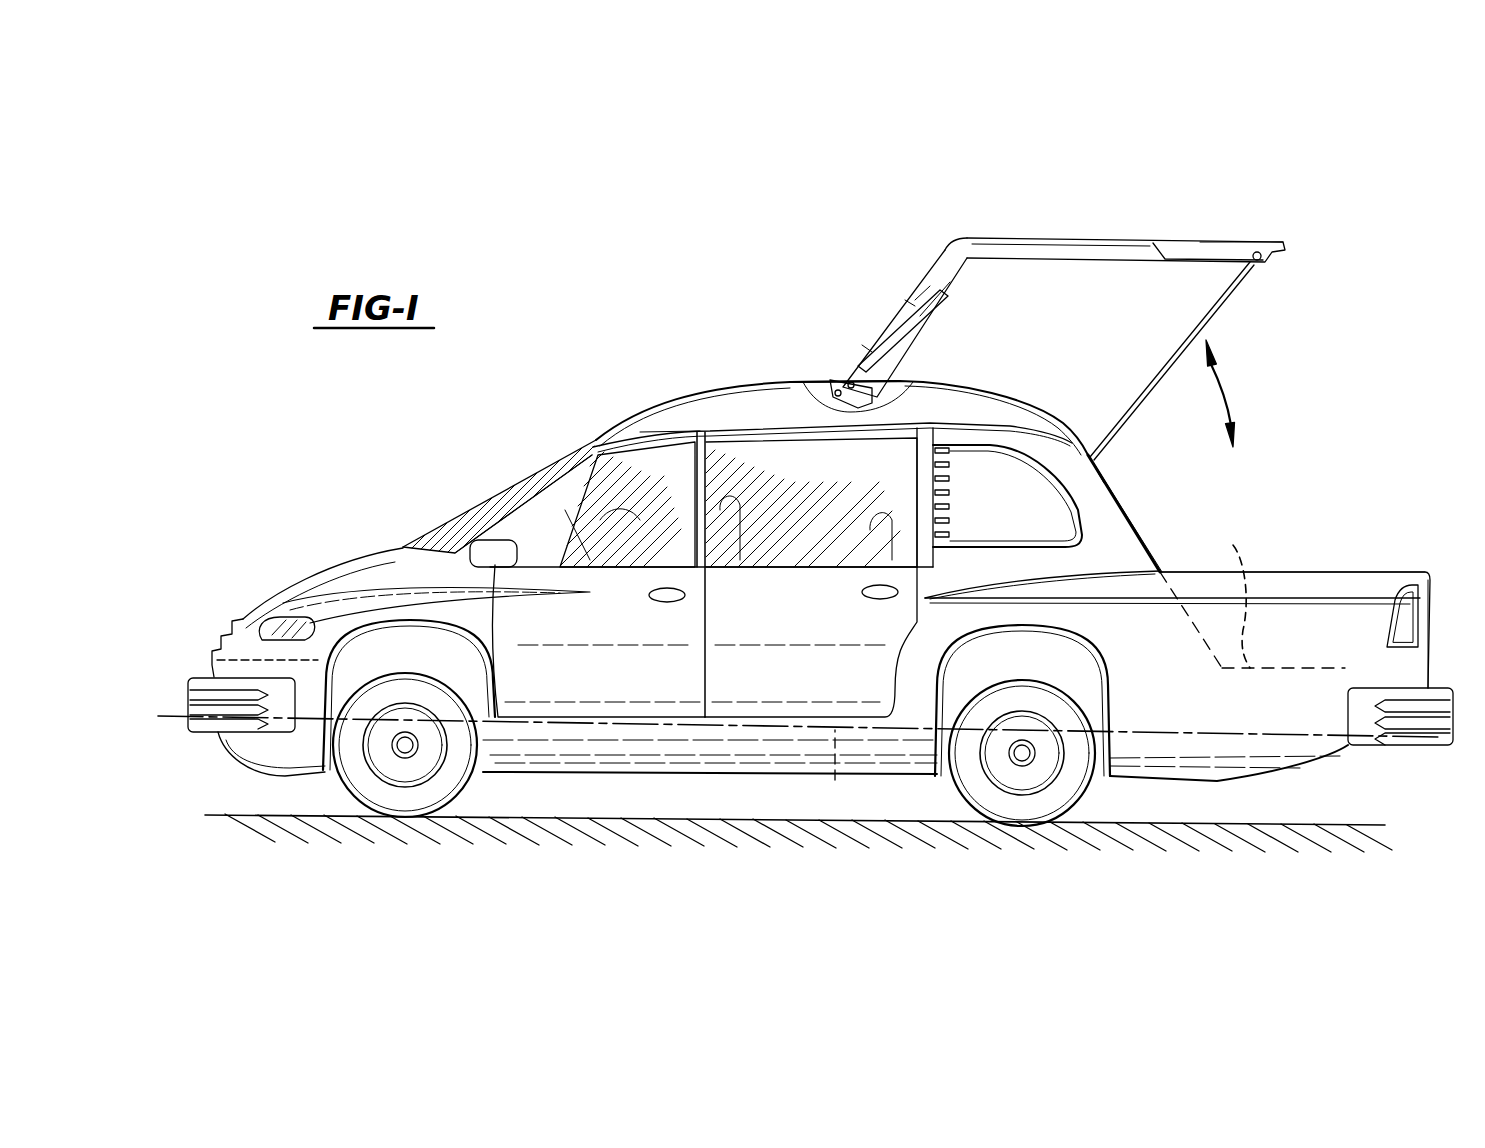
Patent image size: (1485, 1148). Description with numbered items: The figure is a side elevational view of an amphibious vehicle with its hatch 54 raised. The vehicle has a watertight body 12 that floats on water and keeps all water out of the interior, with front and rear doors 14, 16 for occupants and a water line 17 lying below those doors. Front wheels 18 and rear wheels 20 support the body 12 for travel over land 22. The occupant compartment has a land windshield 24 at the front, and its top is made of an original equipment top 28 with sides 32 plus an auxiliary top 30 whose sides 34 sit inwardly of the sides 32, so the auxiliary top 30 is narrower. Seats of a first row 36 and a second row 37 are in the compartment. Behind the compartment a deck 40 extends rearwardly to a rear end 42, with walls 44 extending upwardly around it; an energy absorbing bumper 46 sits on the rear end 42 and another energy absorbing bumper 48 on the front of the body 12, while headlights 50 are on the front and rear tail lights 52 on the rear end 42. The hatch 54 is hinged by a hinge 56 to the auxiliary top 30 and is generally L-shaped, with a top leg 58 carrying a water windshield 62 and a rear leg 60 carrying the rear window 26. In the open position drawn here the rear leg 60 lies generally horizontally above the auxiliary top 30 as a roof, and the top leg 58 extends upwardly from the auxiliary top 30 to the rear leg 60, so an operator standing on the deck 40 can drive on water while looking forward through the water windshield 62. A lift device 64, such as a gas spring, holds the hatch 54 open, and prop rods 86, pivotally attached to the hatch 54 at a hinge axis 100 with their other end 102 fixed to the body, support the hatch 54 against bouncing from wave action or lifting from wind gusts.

The watertight body 12 is at (625, 772).
The front door 14 is at (552, 708).
The rear door 16 is at (747, 703).
The water line 17 is at (835, 780).
The front wheels 18 is at (350, 783).
The rear wheels 20 is at (973, 792).
The land 22 is at (1137, 822).
The land windshield 24 is at (492, 500).
The rear window 26 is at (1120, 240).
The original equipment top 28 is at (610, 443).
The auxiliary top 30 is at (778, 382).
The sides of the original equipment top 32 is at (747, 437).
The sides of the auxiliary top 34 is at (687, 420).
The first row of seats 36 is at (730, 520).
The second row of seats 37 is at (887, 550).
The deck 40 is at (1226, 593).
The rear end 42 is at (1428, 580).
The walls 44 is at (1300, 572).
The energy absorbing bumper 46 is at (1433, 745).
The energy absorbing bumper 48 is at (185, 687).
The headlights 50 is at (297, 627).
The rear tail lights 52 is at (1397, 603).
The hatch 54 is at (1240, 241).
The hinge 56 is at (840, 383).
The top leg 58 is at (927, 283).
The rear leg 60 is at (1190, 253).
The water windshield 62 is at (903, 290).
The lift device 64 is at (910, 363).
The prop rods 86 is at (1205, 312).
The hinge axis 100 is at (1250, 265).
The other end 102 is at (1100, 458).